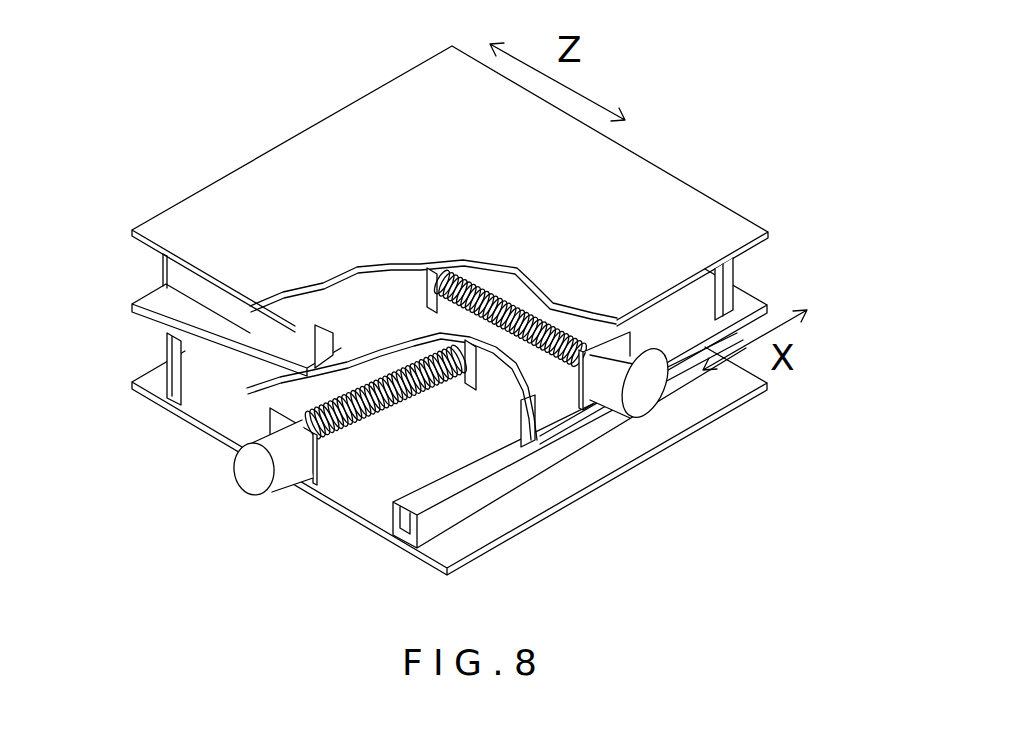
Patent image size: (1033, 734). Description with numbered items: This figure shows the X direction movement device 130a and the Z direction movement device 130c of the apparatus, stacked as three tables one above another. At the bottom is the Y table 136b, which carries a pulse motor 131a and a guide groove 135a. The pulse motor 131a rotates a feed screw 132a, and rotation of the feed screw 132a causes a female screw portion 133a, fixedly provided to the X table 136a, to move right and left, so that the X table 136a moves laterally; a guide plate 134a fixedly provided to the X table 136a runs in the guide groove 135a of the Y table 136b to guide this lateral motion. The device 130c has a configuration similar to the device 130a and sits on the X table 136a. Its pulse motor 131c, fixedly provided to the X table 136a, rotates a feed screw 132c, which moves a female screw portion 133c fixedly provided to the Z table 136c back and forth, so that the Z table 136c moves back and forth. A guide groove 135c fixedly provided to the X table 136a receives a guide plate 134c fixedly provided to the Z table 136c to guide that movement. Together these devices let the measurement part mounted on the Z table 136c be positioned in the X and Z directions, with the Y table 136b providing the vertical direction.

The X direction movement device 130a is at (165, 476).
The Z direction movement device 130c is at (690, 162).
The pulse motor 131a is at (287, 460).
The pulse motor 131c is at (647, 400).
The feed screw 132a is at (363, 417).
The feed screw 132c is at (550, 315).
The female screw portion 133a is at (468, 372).
The female screw portion 133c is at (438, 272).
The guide plate 134a is at (175, 345).
The guide plate 134c is at (338, 288).
The guide groove 135a is at (473, 495).
The guide groove 135c is at (310, 370).
The X table 136a is at (168, 302).
The Y table 136b is at (723, 393).
The Z table 136c is at (704, 223).